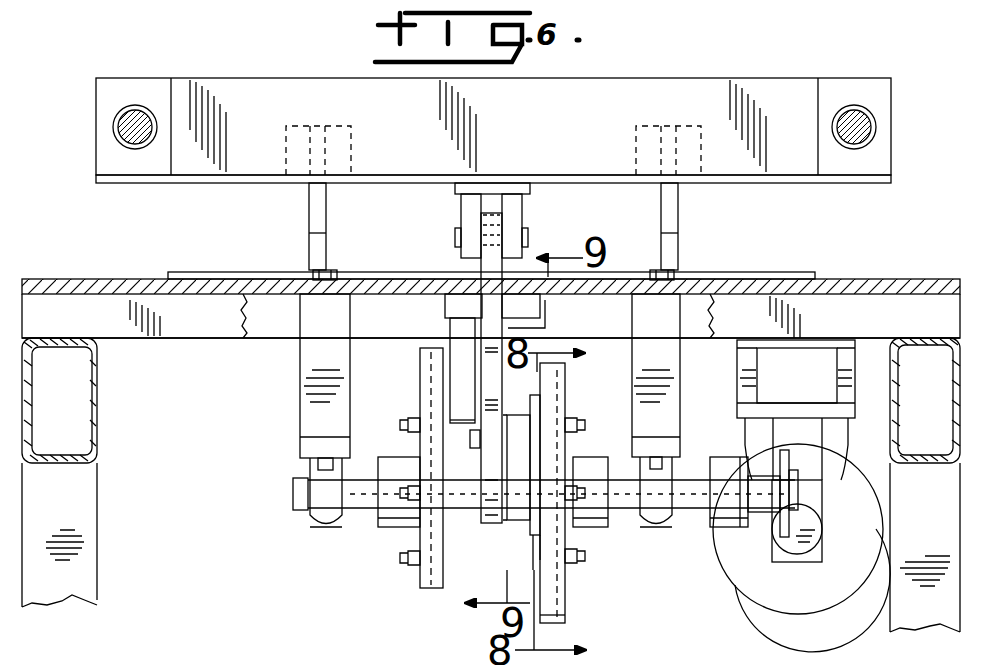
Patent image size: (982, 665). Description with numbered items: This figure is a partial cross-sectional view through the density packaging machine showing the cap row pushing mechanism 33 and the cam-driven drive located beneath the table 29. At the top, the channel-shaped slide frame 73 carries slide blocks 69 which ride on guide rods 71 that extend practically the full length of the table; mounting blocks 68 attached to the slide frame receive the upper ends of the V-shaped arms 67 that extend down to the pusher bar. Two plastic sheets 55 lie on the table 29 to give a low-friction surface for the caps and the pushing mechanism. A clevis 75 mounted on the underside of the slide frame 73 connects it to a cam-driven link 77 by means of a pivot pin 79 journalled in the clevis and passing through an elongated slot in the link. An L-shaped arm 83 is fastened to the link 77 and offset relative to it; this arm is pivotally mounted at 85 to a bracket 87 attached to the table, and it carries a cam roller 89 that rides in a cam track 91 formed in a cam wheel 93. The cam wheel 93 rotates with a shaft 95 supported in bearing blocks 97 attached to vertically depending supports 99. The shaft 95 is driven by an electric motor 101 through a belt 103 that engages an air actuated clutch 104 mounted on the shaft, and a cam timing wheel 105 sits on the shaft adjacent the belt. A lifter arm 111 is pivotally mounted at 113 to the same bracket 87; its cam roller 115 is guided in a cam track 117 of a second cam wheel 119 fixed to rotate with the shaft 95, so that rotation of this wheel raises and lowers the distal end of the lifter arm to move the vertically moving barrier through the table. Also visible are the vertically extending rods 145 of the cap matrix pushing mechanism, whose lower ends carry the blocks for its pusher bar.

The slide frame 73 is at (593, 84).
The slide blocks 69 is at (136, 82).
The guide rods 71 is at (128, 126).
The cap row pushing mechanism 33 is at (709, 75).
The mounting blocks 68 is at (350, 158).
The V-shaped arms 67 is at (309, 205).
The clevis 75 is at (522, 226).
The pivot pin 79 is at (456, 238).
The cam-driven link 77 is at (482, 270).
The plastic sheets 55 is at (790, 273).
The table 29 is at (866, 281).
The L-shaped arm 83 is at (450, 324).
The vertically depending supports 99 is at (312, 364).
The shaft 95 is at (363, 510).
The cam roller 89 is at (428, 380).
The cam wheel 93 is at (412, 572).
The cam track 91 is at (448, 582).
The lifter arm 111 is at (524, 522).
The bracket 87 is at (492, 526).
The pivot mounting of lifter arm 113 is at (510, 436).
The pivot mounting of L-shaped arm 85 is at (512, 406).
The cam roller 115 is at (577, 536).
The cam track 117 is at (565, 592).
The cam wheel 119 is at (556, 626).
The air actuated clutch 104 is at (736, 470).
The belt 103 is at (724, 530).
The cam timing wheel 105 is at (820, 514).
The electric motor 101 is at (806, 614).
The bearing blocks 97 is at (315, 529).
The vertically extending rods 145 is at (302, 664).